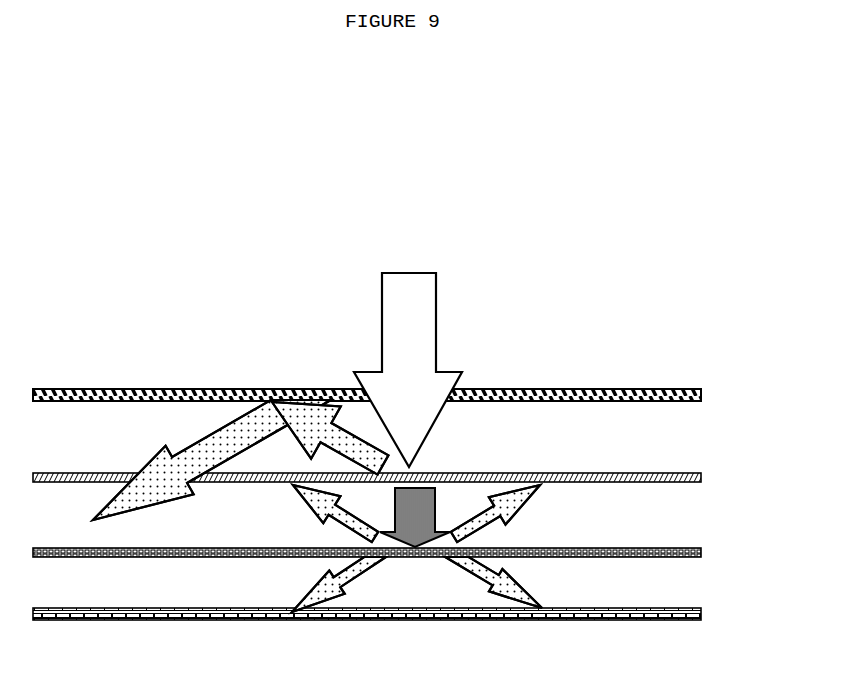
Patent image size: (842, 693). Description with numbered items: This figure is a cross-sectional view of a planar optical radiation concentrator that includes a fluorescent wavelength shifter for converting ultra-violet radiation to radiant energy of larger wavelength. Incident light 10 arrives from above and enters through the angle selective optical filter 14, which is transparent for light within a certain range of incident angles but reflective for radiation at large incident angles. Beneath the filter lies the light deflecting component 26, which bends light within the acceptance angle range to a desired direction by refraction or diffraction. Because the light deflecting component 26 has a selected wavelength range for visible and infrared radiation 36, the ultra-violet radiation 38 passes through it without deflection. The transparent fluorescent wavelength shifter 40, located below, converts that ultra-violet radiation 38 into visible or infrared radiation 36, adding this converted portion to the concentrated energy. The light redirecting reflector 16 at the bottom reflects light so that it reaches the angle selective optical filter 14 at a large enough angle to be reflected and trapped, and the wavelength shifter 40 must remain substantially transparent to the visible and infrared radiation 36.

The incident light 10 is at (410, 307).
The angle selective optical filter 14 is at (118, 390).
The light redirecting reflector 16 is at (103, 613).
The light deflecting component 26 is at (557, 472).
The visible and infrared radiation 36 is at (140, 488).
The ultra-violet radiation 38 is at (417, 502).
The transparent fluorescent wavelength shifter 40 is at (535, 553).